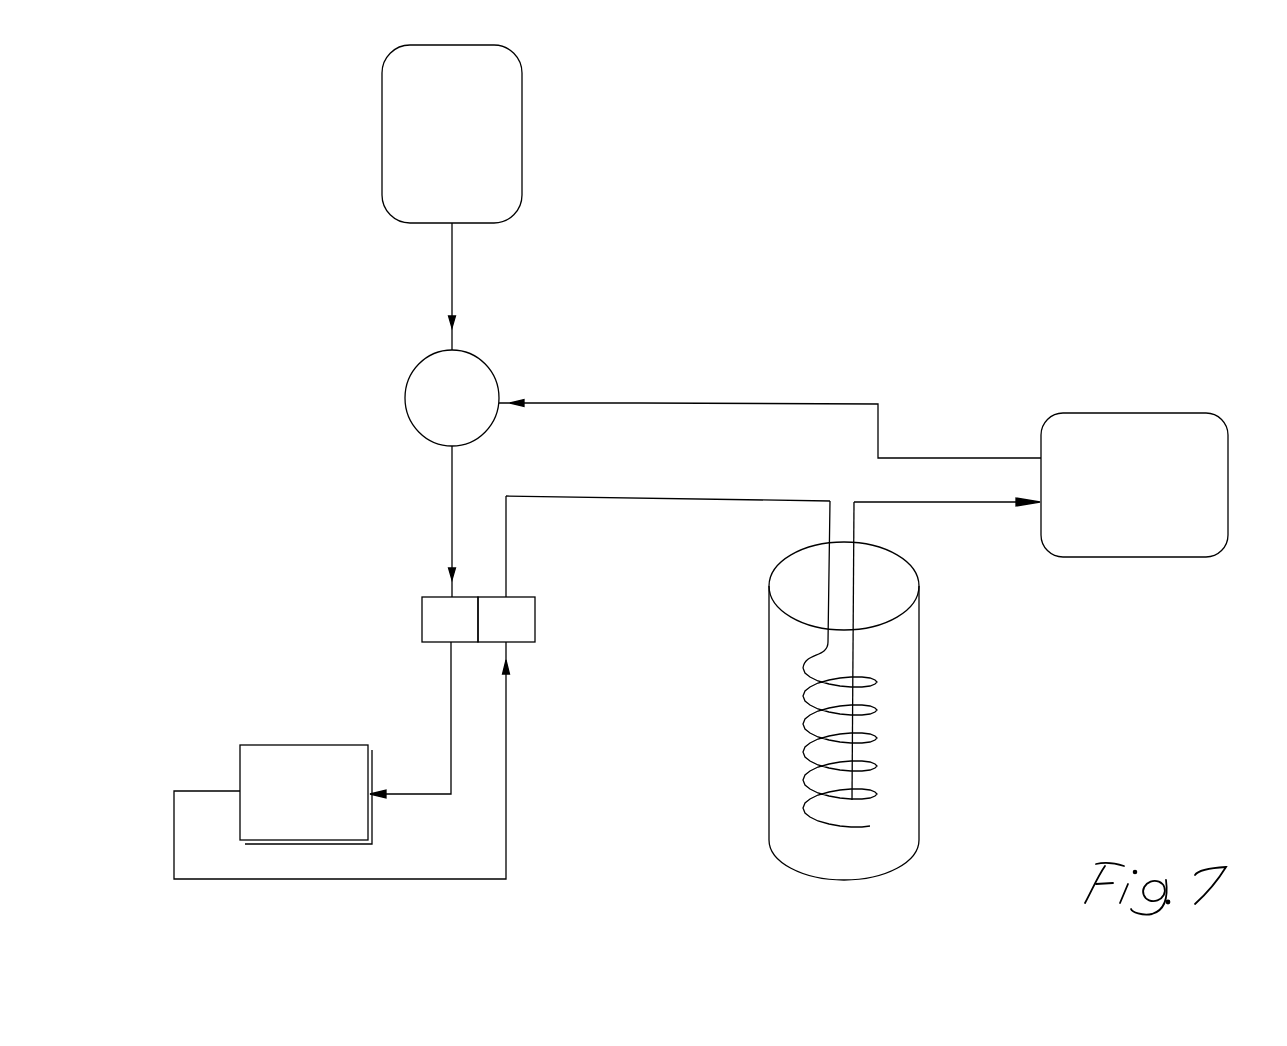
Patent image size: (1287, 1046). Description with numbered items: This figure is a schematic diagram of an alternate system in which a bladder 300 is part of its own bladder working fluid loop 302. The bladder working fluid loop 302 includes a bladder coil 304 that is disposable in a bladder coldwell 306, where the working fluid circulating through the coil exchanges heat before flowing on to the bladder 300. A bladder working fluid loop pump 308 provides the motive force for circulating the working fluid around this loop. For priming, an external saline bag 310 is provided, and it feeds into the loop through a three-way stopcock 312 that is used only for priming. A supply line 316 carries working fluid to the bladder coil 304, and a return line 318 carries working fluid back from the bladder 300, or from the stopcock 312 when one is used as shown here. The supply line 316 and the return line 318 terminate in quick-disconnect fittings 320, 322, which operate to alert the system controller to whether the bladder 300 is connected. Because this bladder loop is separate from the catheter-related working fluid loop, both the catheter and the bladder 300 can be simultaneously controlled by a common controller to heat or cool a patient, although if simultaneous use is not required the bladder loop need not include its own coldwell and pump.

The bladder 300 is at (1100, 422).
The bladder working fluid loop 302 is at (720, 404).
The bladder coil 304 is at (877, 717).
The bladder coldwell 306 is at (910, 767).
The bladder working fluid loop pump 308 is at (275, 752).
The external saline bag 310 is at (503, 90).
The three-way stopcock 312 is at (425, 375).
The supply line 316 is at (598, 497).
The return line 318 is at (543, 401).
The quick-disconnect fitting 320 is at (522, 617).
The quick-disconnect fitting 322 is at (433, 610).